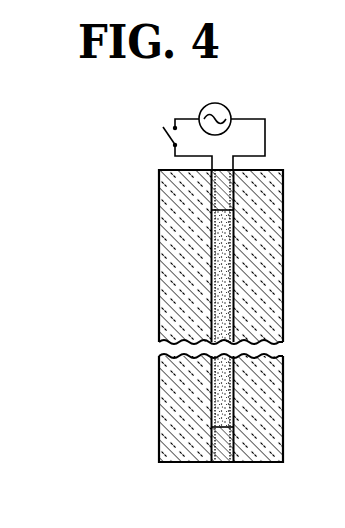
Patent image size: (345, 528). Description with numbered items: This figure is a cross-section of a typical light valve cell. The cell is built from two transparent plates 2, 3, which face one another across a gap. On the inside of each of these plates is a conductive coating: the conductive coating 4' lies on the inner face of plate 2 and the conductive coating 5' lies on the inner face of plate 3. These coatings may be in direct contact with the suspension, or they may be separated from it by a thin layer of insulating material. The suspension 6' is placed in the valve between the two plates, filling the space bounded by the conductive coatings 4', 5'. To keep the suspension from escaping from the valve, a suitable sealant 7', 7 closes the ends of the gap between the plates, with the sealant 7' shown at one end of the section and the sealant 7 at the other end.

The transparent plate 2 is at (267, 428).
The transparent plate 3 is at (168, 413).
The conductive coating 4' is at (275, 316).
The conductive coating 5' is at (165, 316).
The suspension 6' is at (265, 318).
The sealant 7' is at (257, 171).
The sealant 7 is at (212, 462).